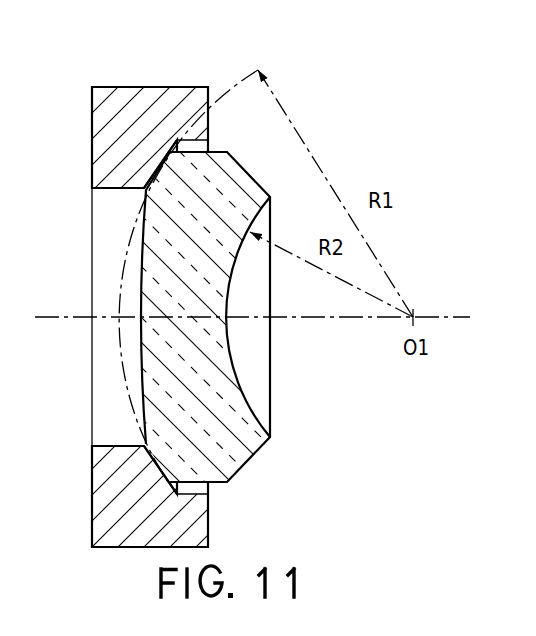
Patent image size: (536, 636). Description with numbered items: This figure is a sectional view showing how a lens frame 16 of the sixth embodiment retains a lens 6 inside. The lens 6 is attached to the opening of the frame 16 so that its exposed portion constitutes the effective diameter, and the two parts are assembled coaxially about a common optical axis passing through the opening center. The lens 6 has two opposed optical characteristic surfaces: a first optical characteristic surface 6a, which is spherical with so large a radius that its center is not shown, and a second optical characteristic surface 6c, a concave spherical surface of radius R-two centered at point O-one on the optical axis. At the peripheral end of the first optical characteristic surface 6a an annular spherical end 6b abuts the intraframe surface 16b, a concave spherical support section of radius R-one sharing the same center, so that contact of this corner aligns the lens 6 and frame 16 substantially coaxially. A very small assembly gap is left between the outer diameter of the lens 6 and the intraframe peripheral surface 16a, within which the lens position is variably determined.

The lens frame 16 is at (84, 97).
The intraframe peripheral surface 16a is at (207, 128).
The intraframe surface 16b is at (158, 168).
The lens 6 is at (243, 486).
The first optical characteristic surface 6a is at (128, 372).
The spherical end 6b is at (167, 157).
The second optical characteristic surface 6c is at (243, 392).